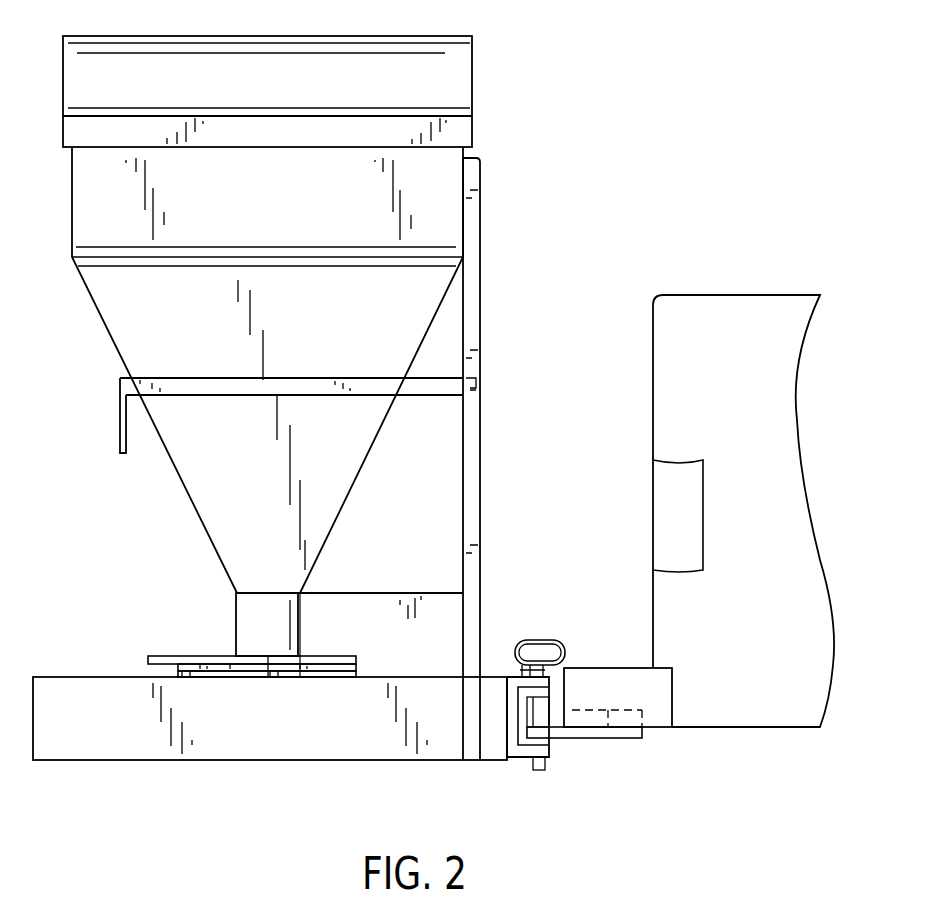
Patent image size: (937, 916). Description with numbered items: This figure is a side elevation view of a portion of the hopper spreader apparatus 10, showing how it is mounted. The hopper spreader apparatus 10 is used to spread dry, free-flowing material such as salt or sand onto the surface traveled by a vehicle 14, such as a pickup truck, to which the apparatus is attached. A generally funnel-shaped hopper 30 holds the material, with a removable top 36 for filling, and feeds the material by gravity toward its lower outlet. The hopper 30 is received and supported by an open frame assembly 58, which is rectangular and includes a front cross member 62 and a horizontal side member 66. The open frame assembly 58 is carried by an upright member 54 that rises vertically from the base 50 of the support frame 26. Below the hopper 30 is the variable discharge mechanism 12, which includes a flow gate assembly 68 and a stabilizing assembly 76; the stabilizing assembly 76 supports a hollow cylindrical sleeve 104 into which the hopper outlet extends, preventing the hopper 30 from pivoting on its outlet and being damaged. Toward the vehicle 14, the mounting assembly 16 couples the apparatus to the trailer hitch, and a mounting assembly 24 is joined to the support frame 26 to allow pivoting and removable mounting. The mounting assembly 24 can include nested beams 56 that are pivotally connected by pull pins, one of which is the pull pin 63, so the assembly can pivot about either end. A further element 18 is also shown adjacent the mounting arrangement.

The hopper spreader apparatus 10 is at (544, 223).
The variable discharge mechanism 12 is at (148, 597).
The vehicle 14 is at (731, 302).
The mounting assembly 16 is at (540, 617).
The clamp block 18 is at (618, 668).
The mounting assembly 24 is at (518, 758).
The support frame 26 is at (485, 301).
The hopper 30 is at (453, 72).
The removable top 36 is at (75, 83).
The base 50 is at (274, 755).
The upright member 54 is at (480, 462).
The nested beams 56 is at (550, 755).
The open frame assembly 58 is at (176, 400).
The front cross member 62 is at (481, 377).
The pull pin 63 is at (513, 657).
The horizontal side member 66 is at (316, 380).
The flow gate assembly 68 is at (165, 653).
The stabilizing assembly 76 is at (371, 589).
The sleeve 104 is at (235, 624).